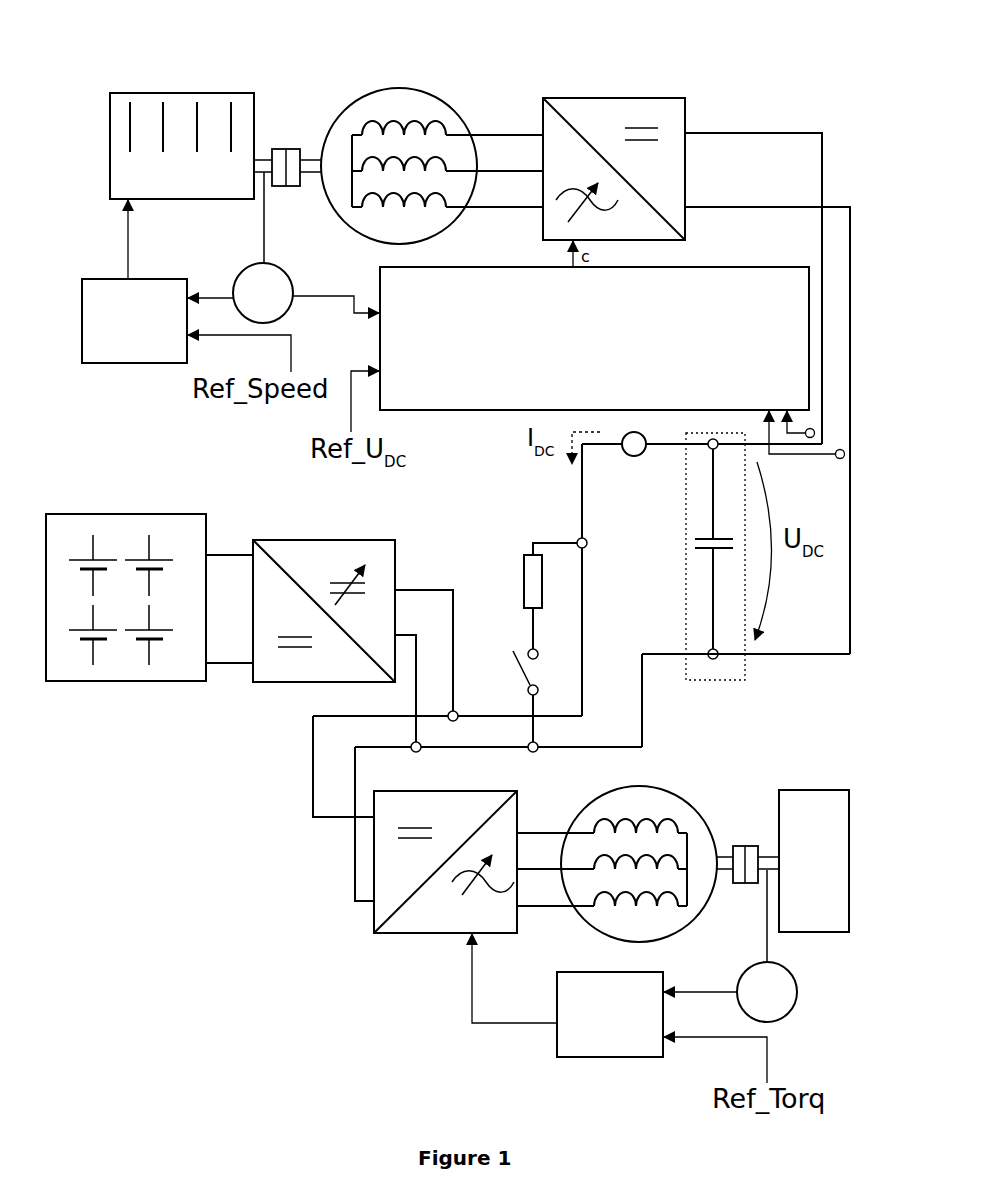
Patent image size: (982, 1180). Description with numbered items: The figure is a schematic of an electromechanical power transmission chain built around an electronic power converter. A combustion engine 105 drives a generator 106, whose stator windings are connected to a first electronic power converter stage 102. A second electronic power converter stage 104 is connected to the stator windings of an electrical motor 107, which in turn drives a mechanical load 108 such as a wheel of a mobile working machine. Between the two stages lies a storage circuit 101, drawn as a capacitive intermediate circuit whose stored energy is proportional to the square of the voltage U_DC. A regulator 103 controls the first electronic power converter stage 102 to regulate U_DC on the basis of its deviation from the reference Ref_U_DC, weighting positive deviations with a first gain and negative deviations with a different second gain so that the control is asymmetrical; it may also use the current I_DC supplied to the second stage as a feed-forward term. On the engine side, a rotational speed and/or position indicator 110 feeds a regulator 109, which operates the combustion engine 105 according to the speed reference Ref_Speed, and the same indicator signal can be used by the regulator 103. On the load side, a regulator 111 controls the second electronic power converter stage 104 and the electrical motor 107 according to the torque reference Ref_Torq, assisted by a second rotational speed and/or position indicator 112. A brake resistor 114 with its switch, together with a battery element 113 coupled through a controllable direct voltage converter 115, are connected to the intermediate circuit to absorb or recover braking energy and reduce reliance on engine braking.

The storage circuit 101 is at (686, 517).
The first electronic power converter stage 102 is at (622, 98).
The regulator 103 is at (414, 294).
The second electronic power converter stage 104 is at (440, 933).
The combustion engine 105 is at (197, 184).
The generator 106 is at (388, 88).
The electrical motor 107 is at (655, 786).
The mechanical load 108 is at (831, 865).
The regulator 109 is at (150, 324).
The rotational speed and/or position indicator 110 is at (281, 302).
The regulator 111 is at (626, 1019).
The rotational speed and/or position indicator 112 is at (784, 1001).
The battery element 113 is at (110, 514).
The brake resistor 114 is at (522, 590).
The controllable direct voltage converter 115 is at (346, 538).